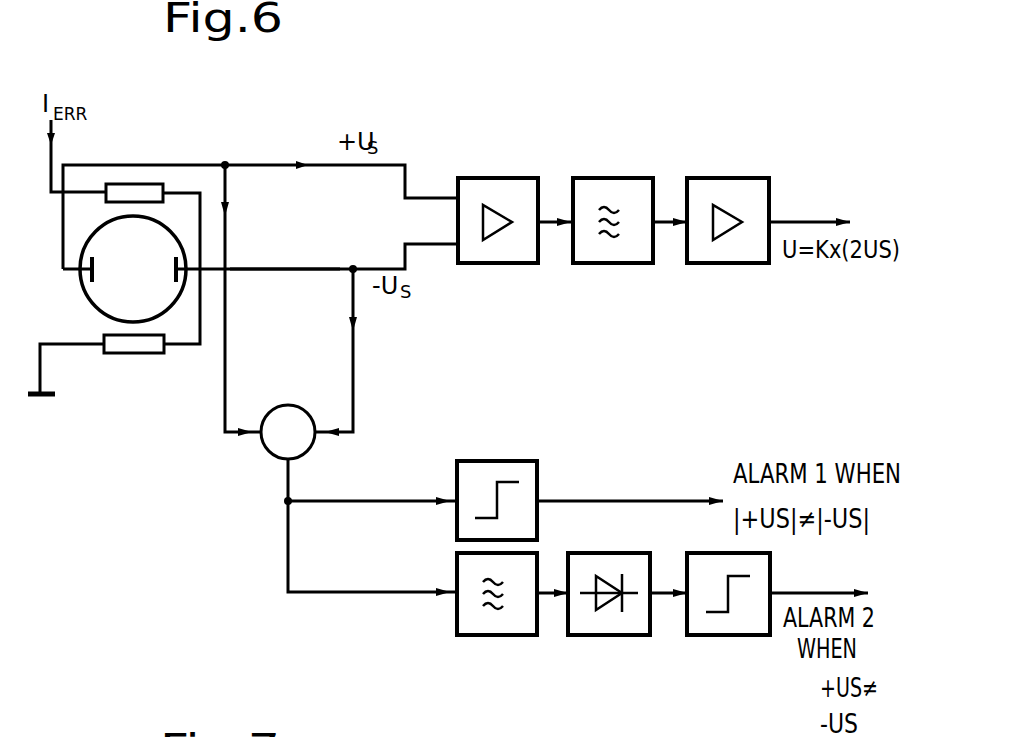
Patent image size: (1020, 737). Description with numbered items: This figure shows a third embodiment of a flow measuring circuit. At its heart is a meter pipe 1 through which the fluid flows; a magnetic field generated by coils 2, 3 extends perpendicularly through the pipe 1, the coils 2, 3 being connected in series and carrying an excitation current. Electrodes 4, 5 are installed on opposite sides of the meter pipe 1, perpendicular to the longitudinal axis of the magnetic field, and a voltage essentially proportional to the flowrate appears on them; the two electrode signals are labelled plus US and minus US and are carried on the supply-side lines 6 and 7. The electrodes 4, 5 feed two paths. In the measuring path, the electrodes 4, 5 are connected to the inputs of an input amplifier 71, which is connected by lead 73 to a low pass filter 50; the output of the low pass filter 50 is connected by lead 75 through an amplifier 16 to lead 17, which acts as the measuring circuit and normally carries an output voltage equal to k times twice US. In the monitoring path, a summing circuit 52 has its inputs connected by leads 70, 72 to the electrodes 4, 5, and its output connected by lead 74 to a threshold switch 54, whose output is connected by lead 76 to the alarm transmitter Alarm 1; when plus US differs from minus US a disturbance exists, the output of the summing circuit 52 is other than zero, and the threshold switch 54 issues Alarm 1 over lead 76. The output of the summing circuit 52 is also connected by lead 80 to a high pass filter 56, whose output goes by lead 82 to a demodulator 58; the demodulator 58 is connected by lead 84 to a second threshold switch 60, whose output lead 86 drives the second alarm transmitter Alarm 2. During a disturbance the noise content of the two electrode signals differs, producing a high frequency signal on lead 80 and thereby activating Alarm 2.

The meter pipe 1 is at (90, 306).
The coil 2 is at (108, 202).
The coil 3 is at (130, 354).
The electrode 4 is at (80, 284).
The electrode 5 is at (180, 284).
The first supply line (+US) 6 is at (168, 165).
The second supply line (-US) 7 is at (300, 268).
The amplifier 16 is at (731, 178).
The lead 17 is at (805, 220).
The low pass filter 50 is at (613, 178).
The summing circuit 52 is at (284, 406).
The threshold switch 54 is at (516, 461).
The high pass filter 56 is at (488, 640).
The demodulator 58 is at (600, 640).
The threshold switch 60 is at (716, 553).
The lead 70 is at (228, 326).
The input amplifier 71 is at (502, 178).
The lead 72 is at (357, 378).
The lead 73 is at (543, 221).
The lead 74 is at (398, 498).
The lead 75 is at (660, 220).
The lead 76 is at (665, 500).
The lead 80 is at (374, 590).
The lead 82 is at (545, 589).
The lead 84 is at (655, 589).
The lead 86 is at (807, 591).